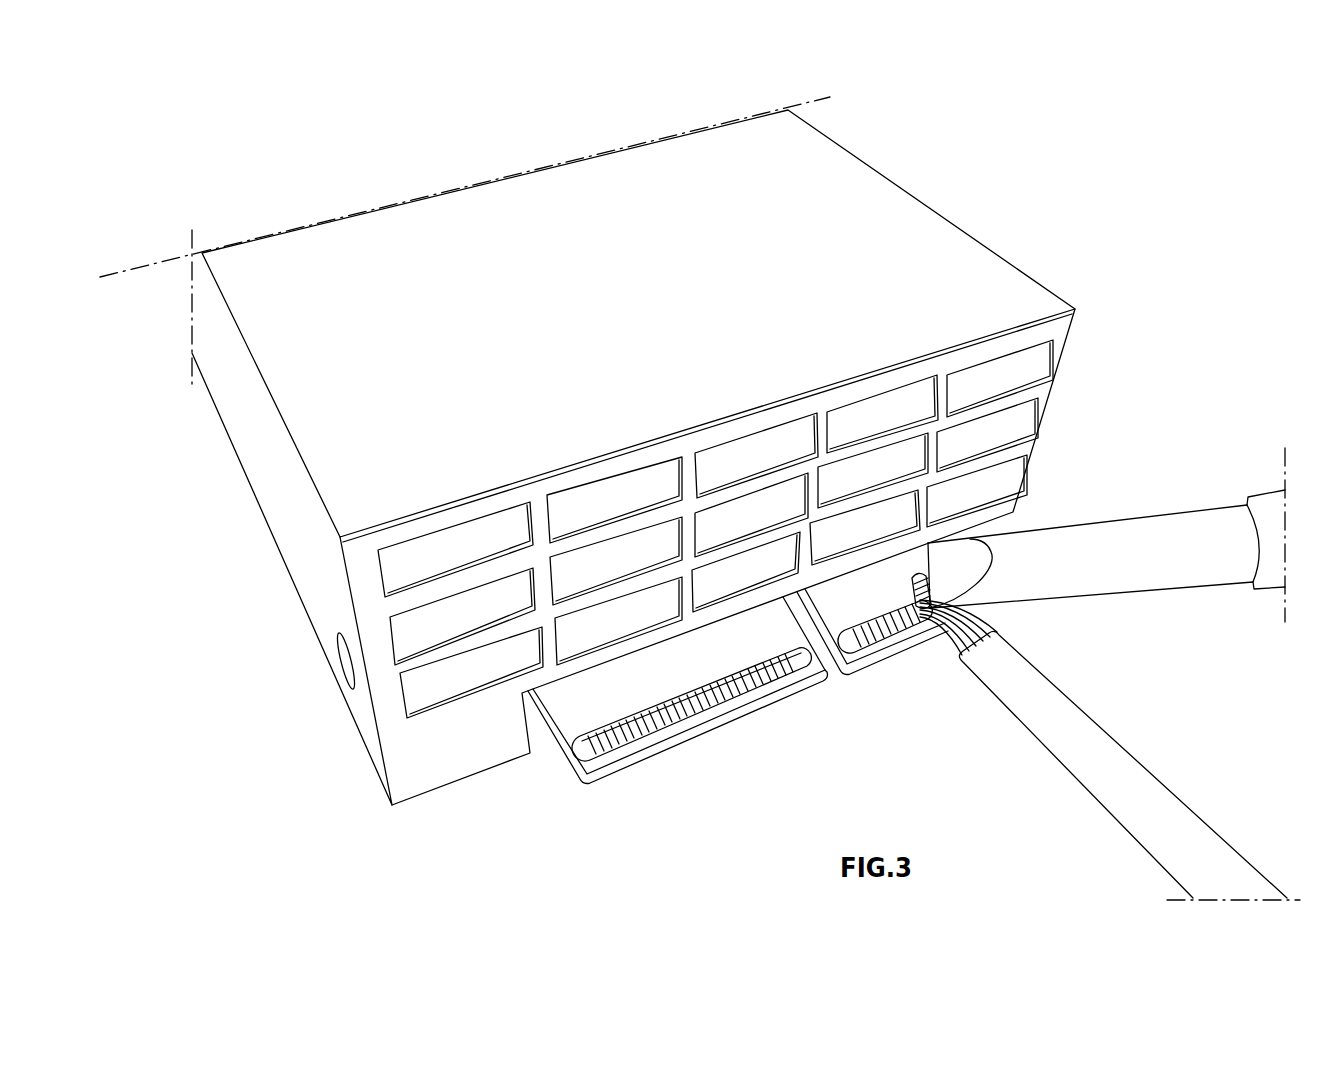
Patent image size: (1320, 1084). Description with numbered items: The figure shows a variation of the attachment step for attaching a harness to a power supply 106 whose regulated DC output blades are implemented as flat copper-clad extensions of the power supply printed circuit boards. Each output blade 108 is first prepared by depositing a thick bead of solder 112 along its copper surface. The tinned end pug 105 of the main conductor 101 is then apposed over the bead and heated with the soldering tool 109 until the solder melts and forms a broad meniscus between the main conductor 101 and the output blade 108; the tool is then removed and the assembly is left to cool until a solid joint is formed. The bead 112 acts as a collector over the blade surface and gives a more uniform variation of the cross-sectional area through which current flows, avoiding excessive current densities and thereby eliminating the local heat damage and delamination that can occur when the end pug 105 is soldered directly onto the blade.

The main conductor 101 is at (1106, 785).
The tinned end pug 105 is at (983, 610).
The power supply 106 is at (300, 418).
The output blade 108 is at (678, 734).
The soldering tool 109 is at (1155, 516).
The bead of solder 112 is at (750, 707).